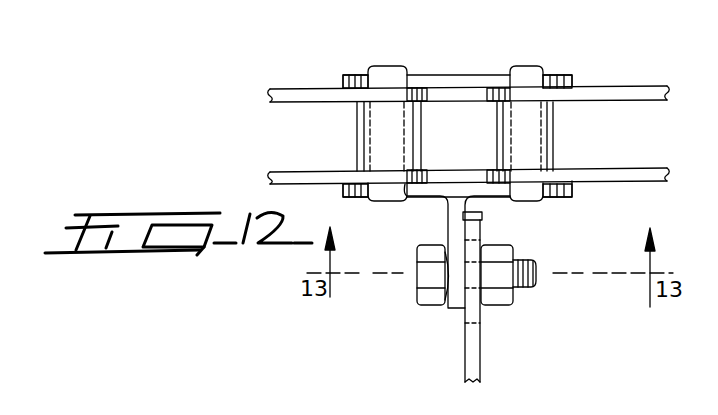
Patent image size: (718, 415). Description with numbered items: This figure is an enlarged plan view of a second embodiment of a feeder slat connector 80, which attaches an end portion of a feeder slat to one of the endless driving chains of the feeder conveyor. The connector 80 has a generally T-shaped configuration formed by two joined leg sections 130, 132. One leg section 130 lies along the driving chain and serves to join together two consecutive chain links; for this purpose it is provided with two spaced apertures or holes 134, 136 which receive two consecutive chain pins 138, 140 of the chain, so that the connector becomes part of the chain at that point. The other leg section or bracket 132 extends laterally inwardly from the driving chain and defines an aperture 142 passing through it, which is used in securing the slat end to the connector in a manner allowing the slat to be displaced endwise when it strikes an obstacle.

The chain pin 138 is at (395, 66).
The chain pin 140 is at (527, 66).
The aperture or hole 134 is at (373, 188).
The aperture or hole 136 is at (540, 170).
The connector 80 is at (578, 203).
The leg section 130 is at (484, 193).
The aperture 142 is at (432, 274).
The leg section or bracket 132 is at (455, 306).